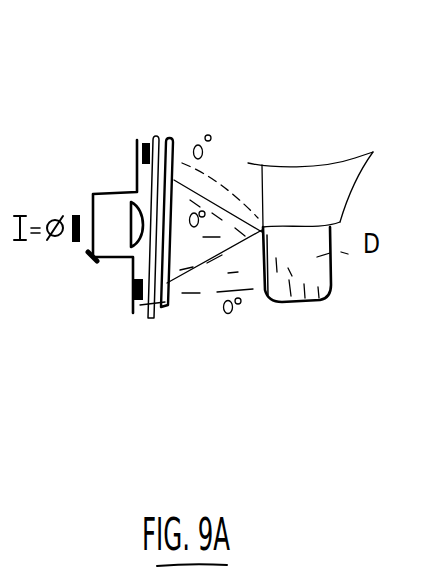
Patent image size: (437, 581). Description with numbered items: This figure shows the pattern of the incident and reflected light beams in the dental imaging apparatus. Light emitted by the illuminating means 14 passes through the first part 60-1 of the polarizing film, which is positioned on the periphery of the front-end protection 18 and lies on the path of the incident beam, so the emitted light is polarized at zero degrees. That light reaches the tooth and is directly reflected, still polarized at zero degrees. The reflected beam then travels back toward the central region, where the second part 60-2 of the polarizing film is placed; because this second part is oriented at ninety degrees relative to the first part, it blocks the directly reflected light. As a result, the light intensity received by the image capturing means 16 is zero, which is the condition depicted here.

The illuminating means 14 is at (145, 147).
The image capturing means 16 is at (78, 213).
The front-end protection 18 is at (148, 316).
The first part of the polarizing film 60-1 is at (178, 140).
The second part of the polarizing film 60-2 is at (170, 228).